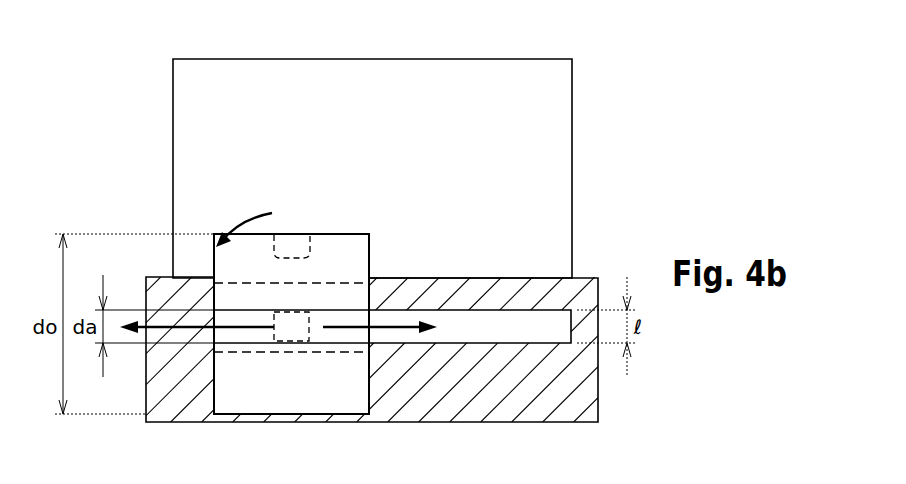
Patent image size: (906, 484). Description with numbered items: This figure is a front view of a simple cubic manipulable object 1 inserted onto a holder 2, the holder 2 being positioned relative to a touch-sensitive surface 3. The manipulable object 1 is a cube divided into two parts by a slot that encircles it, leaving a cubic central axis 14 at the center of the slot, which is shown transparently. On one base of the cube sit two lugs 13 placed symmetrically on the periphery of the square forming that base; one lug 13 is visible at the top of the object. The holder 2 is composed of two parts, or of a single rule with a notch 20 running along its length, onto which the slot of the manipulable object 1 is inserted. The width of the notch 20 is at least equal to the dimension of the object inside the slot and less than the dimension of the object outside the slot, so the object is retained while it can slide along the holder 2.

The manipulable object 1 is at (241, 393).
The holder 2 is at (590, 278).
The touch-sensitive surface 3 is at (528, 108).
The lug 13 is at (292, 244).
The central axis 14 is at (291, 338).
The notch 20 is at (485, 327).